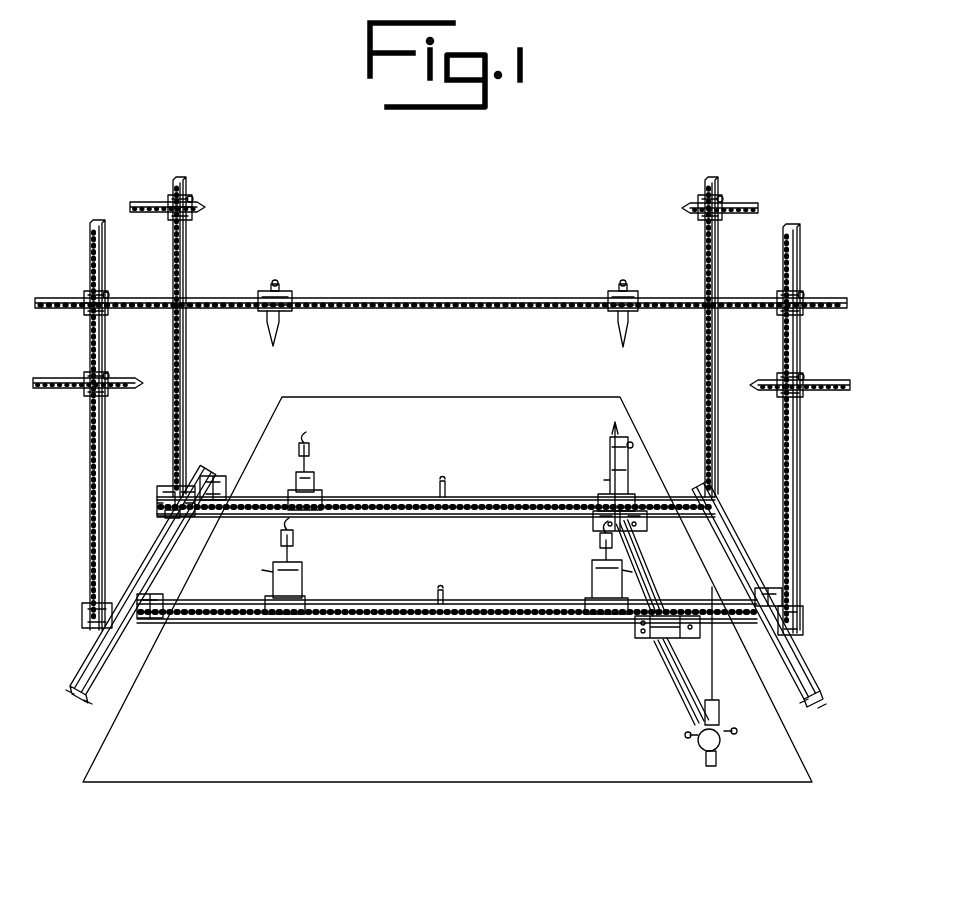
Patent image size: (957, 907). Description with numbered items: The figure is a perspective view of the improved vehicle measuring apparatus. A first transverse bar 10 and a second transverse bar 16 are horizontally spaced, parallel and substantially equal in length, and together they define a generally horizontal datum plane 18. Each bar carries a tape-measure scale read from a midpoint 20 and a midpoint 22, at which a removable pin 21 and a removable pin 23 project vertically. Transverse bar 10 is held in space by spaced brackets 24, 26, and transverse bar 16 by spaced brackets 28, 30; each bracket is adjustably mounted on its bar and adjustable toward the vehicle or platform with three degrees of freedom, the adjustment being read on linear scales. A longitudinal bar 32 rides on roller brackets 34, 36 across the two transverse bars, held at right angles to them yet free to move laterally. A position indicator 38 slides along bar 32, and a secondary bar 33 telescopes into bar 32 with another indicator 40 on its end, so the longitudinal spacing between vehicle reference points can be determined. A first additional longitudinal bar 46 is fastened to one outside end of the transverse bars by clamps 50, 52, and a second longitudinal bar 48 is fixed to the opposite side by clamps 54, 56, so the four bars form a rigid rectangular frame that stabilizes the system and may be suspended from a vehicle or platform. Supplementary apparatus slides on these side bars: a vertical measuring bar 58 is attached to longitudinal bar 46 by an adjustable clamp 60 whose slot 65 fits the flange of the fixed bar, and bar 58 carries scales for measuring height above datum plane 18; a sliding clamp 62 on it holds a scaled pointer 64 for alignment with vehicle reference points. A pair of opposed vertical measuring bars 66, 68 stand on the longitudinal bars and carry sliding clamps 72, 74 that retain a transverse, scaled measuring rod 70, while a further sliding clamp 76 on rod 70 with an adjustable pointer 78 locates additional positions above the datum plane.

The first transverse bar 10 is at (385, 497).
The second transverse bar 16 is at (480, 600).
The datum plane 18 is at (400, 410).
The midpoint 20 is at (452, 497).
The removable pin 21 is at (447, 481).
The midpoint 22 is at (437, 600).
The removable pin 23 is at (445, 590).
The bracket 24 is at (319, 481).
The bracket 26 is at (603, 458).
The bracket 28 is at (300, 561).
The bracket 30 is at (600, 566).
The longitudinal bar 32 is at (650, 568).
The secondary bar 33 is at (685, 697).
The roller bracket 34 is at (641, 640).
The roller bracket 36 is at (592, 525).
The position indicator 38 is at (611, 430).
The indicator 40 is at (697, 741).
The first additional longitudinal bar 46 is at (152, 553).
The second longitudinal bar 48 is at (734, 544).
The clamp 50 is at (163, 595).
The clamp 52 is at (228, 475).
The clamp 54 is at (772, 596).
The clamp 56 is at (712, 465).
The vertical measuring bar 58 is at (185, 406).
The adjustable clamp 60 is at (172, 490).
The sliding clamp 62 is at (192, 200).
The pointer 64 is at (203, 212).
The slot 65 is at (172, 514).
The vertical measuring bar 66 is at (88, 448).
The vertical measuring bar 68 is at (800, 447).
The measuring rod 70 is at (483, 297).
The sliding clamp 72 is at (106, 296).
The sliding clamp 74 is at (806, 296).
The sliding clamp 76 is at (284, 294).
The adjustable pointer 78 is at (277, 331).